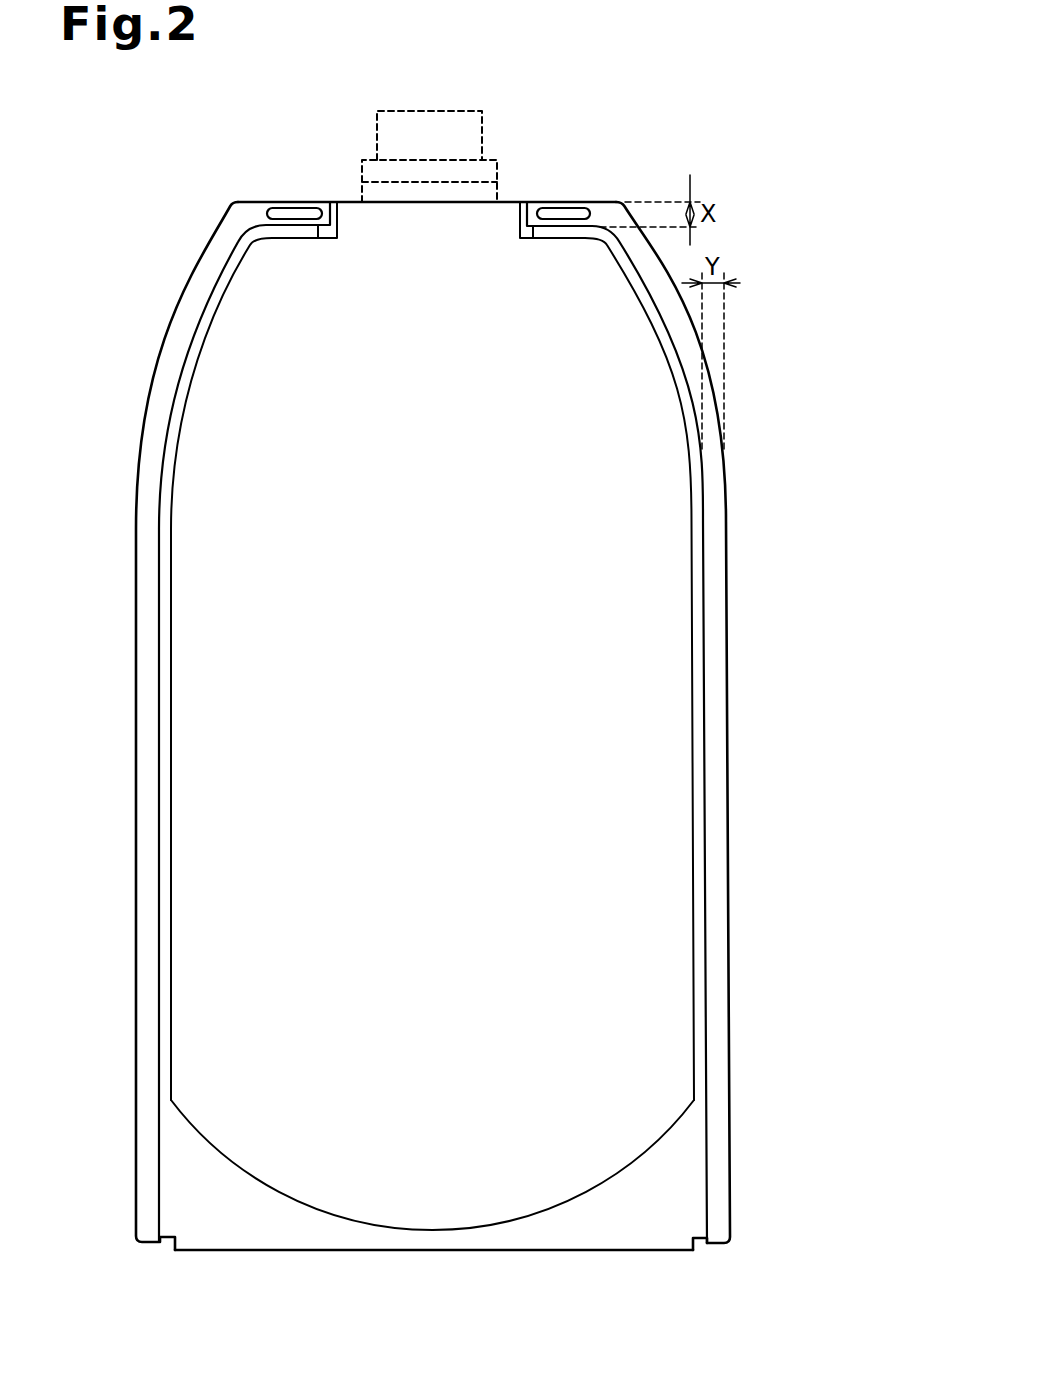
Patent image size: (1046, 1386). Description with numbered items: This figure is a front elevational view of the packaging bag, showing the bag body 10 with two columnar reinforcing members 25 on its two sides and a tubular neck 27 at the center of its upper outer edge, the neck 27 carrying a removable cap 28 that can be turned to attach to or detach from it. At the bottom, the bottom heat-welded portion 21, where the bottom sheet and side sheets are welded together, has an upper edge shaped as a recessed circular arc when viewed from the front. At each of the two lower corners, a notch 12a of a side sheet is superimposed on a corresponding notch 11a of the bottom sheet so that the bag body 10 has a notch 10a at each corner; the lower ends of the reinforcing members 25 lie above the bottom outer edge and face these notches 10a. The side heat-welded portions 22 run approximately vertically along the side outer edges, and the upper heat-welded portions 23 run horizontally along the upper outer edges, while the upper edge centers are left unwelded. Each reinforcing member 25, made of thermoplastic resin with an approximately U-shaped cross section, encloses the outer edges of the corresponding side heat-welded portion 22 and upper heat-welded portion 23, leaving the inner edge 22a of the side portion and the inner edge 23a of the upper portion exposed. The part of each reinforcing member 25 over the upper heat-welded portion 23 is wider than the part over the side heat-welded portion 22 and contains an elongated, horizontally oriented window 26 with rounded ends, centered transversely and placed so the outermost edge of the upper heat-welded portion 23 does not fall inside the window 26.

The bag body 10 is at (447, 749).
The notch 10a is at (463, 1269).
The notch of bottom sheet 11a is at (433, 1243).
The notch of side sheet 12a is at (165, 1243).
The bottom heat-welded portion 21 is at (309, 1240).
The side heat-welded portion 22 is at (163, 557).
The inner edge of side heat-welded portion 22a is at (172, 621).
The upper heat-welded portion 23 is at (292, 239).
The inner edge of upper heat-welded portion 23a is at (318, 240).
The reinforcing member 25 is at (168, 339).
The window 26 is at (300, 209).
The neck 27 is at (492, 160).
The cap 28 is at (450, 111).